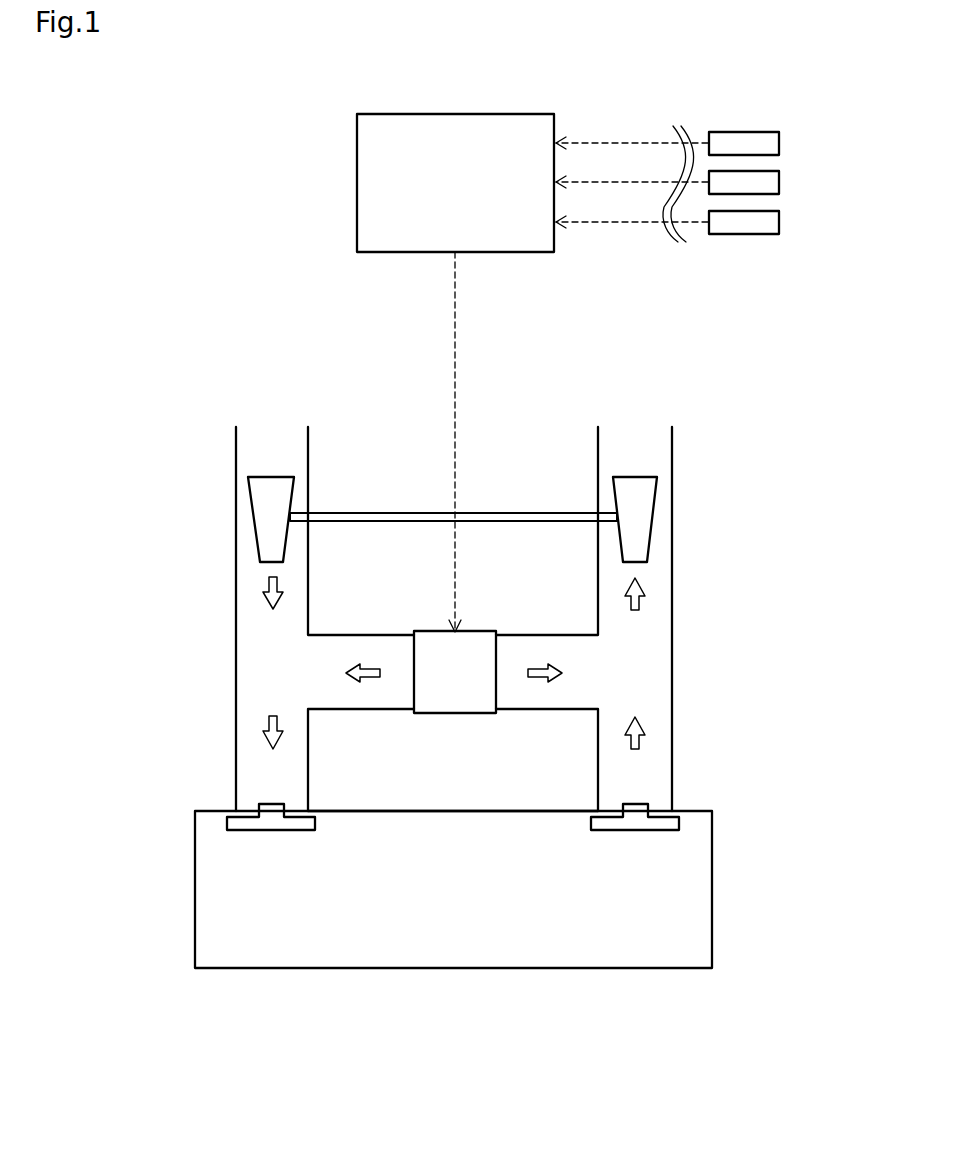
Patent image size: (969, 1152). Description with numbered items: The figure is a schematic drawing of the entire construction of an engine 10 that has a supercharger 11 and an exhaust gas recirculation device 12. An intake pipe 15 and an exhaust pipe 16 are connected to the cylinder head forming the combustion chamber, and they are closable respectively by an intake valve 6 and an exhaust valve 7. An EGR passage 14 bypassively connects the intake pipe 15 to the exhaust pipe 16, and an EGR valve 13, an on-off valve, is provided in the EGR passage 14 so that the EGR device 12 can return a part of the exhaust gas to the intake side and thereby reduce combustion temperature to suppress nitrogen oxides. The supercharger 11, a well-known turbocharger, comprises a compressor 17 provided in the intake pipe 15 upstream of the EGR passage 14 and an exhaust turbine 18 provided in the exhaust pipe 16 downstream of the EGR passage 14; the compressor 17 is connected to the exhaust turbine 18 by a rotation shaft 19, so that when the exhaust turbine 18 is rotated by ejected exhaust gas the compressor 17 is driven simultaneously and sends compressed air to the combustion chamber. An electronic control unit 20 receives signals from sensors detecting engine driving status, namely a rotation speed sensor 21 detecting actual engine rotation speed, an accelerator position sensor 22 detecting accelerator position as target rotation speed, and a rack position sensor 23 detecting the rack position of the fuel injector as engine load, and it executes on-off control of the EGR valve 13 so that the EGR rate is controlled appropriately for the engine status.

The intake valve 6 is at (272, 832).
The exhaust valve 7 is at (635, 832).
The engine 10 is at (170, 267).
The supercharger 11 is at (693, 432).
The exhaust gas recirculation device 12 is at (488, 613).
The EGR valve 13 is at (468, 688).
The EGR passage 14 is at (388, 632).
The intake pipe 15 is at (243, 765).
The exhaust pipe 16 is at (665, 768).
The compressor 17 is at (250, 520).
The exhaust turbine 18 is at (660, 516).
The rotation shaft 19 is at (372, 512).
The Electronic Control Unit 20 is at (525, 373).
The rotation speed sensor 21 is at (783, 143).
The accelerator position sensor 22 is at (783, 182).
The rack position sensor 23 is at (783, 222).